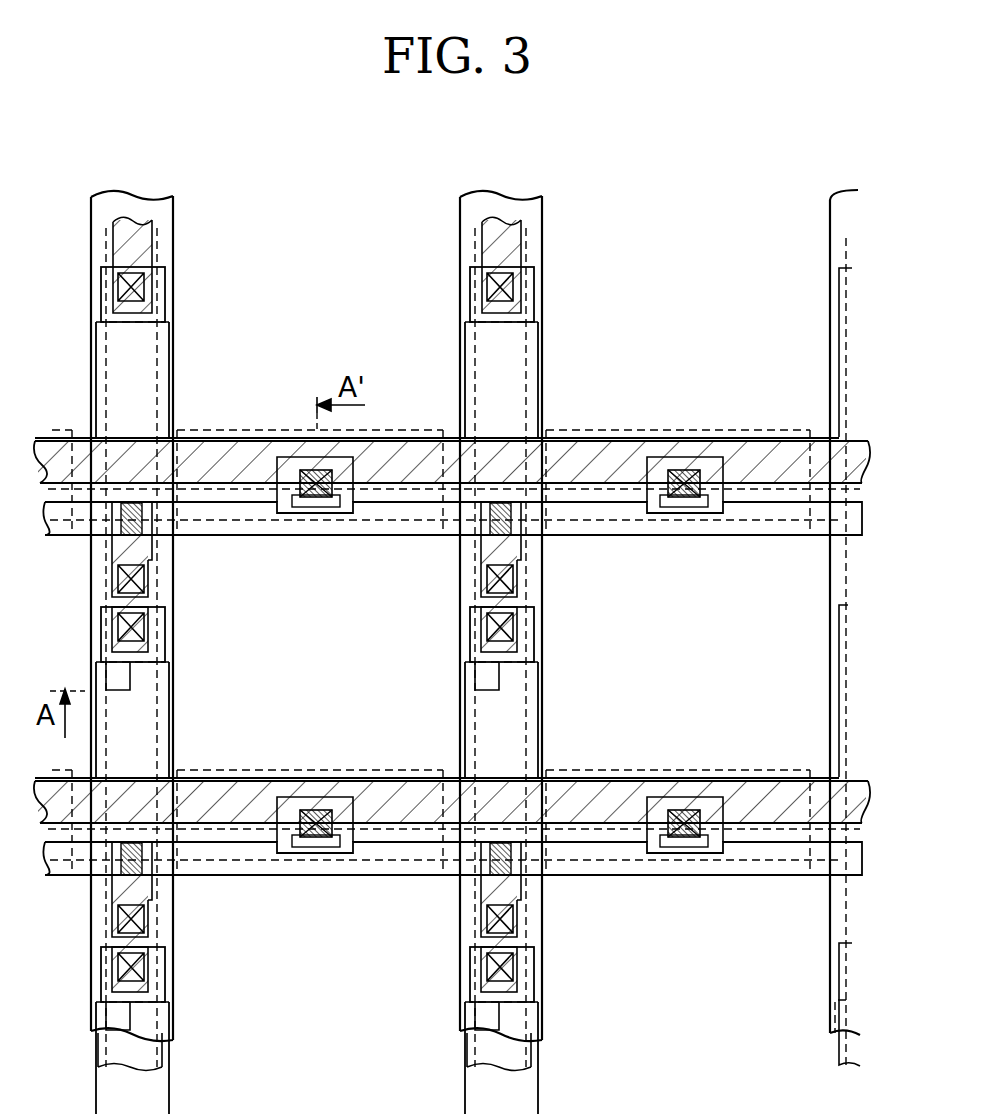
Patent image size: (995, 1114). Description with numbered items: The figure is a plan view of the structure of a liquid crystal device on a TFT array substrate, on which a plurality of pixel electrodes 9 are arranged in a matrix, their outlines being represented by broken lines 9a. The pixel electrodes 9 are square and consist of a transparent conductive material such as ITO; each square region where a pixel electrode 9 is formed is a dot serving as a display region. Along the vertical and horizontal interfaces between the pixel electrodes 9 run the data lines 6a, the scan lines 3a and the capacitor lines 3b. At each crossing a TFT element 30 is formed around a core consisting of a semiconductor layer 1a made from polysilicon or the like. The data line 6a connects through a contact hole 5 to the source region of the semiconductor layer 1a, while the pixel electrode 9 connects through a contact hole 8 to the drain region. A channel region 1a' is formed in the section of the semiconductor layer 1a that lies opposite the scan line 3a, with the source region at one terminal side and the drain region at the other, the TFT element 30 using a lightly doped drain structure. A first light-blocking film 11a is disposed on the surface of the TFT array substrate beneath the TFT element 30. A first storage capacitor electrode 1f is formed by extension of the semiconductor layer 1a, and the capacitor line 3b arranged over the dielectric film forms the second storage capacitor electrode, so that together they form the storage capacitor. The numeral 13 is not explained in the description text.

The TFT element 30 is at (183, 935).
The scan line 3a is at (333, 877).
The capacitor line 3b is at (302, 771).
The pixel electrode 9 is at (332, 641).
The broken lines representing pixel electrode outline 9a is at (788, 521).
The contact hole 8 is at (684, 838).
The semiconductor layer 1a is at (316, 604).
The channel region 1a' is at (369, 717).
The first light-blocking film 11a is at (524, 543).
The data line 6a is at (534, 628).
The first storage capacitor electrode 1f is at (170, 688).
The contact hole 5 is at (517, 918).
The drain contact hole 13 is at (137, 628).